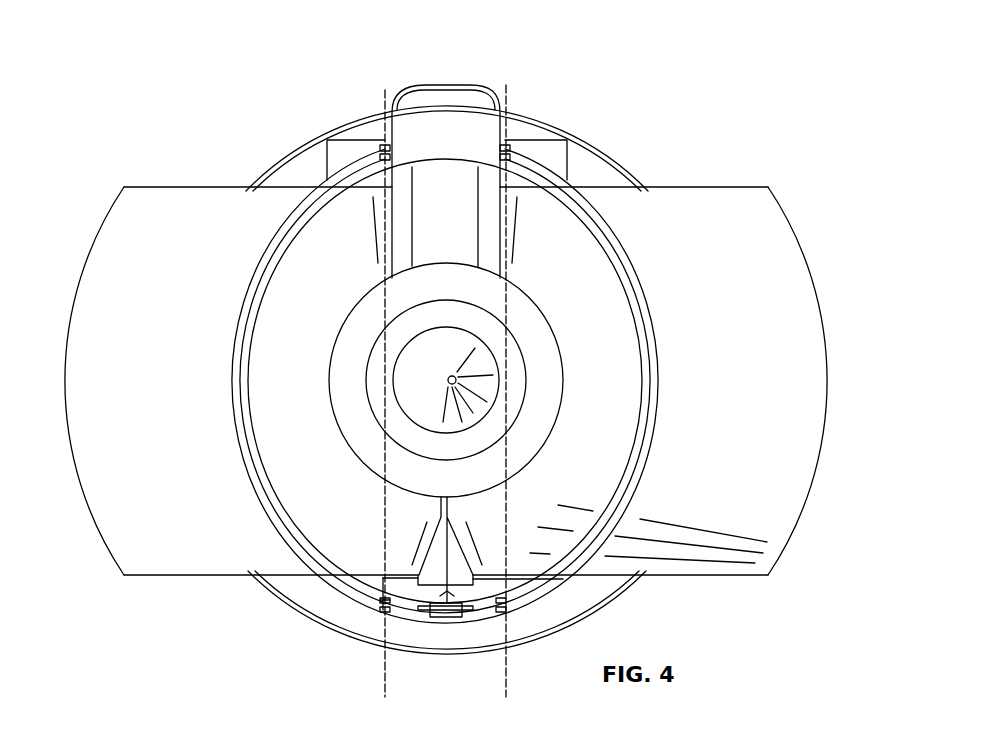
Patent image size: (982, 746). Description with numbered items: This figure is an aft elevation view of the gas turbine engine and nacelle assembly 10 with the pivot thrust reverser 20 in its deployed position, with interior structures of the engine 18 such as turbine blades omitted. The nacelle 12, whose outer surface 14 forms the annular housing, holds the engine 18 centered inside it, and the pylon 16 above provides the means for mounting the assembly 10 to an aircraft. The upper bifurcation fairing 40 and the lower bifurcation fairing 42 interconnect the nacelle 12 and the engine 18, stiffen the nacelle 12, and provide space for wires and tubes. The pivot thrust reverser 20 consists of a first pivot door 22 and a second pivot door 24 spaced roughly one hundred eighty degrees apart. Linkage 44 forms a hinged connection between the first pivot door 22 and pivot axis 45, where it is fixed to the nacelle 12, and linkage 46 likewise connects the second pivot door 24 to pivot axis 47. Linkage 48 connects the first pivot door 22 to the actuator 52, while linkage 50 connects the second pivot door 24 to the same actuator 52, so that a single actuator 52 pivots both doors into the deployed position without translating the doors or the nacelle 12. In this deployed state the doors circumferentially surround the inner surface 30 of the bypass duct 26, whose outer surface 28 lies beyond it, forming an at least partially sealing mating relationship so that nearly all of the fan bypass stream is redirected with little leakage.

The gas turbine engine and nacelle assembly 10 is at (180, 63).
The nacelle 12 is at (652, 165).
The outer surface of nacelle 14 is at (350, 620).
The pylon 16 is at (450, 82).
The engine 18 is at (517, 427).
The pivot thrust reverser 20 is at (760, 175).
The first pivot door 22 is at (125, 302).
The second pivot door 24 is at (780, 358).
The bypass duct 26 is at (412, 582).
The outer surface of bypass duct 28 is at (380, 603).
The inner surface of bypass duct 30 is at (333, 393).
The upper bifurcation fairing 40 is at (452, 187).
The lower bifurcation fairing 42 is at (458, 577).
The linkage 44 is at (330, 182).
The pivot axis of first pivot door 45 is at (385, 98).
The linkage 46 is at (567, 178).
The pivot axis of second pivot door 47 is at (507, 97).
The linkage 48 is at (350, 645).
The linkage 50 is at (547, 603).
The actuator 52 is at (450, 620).